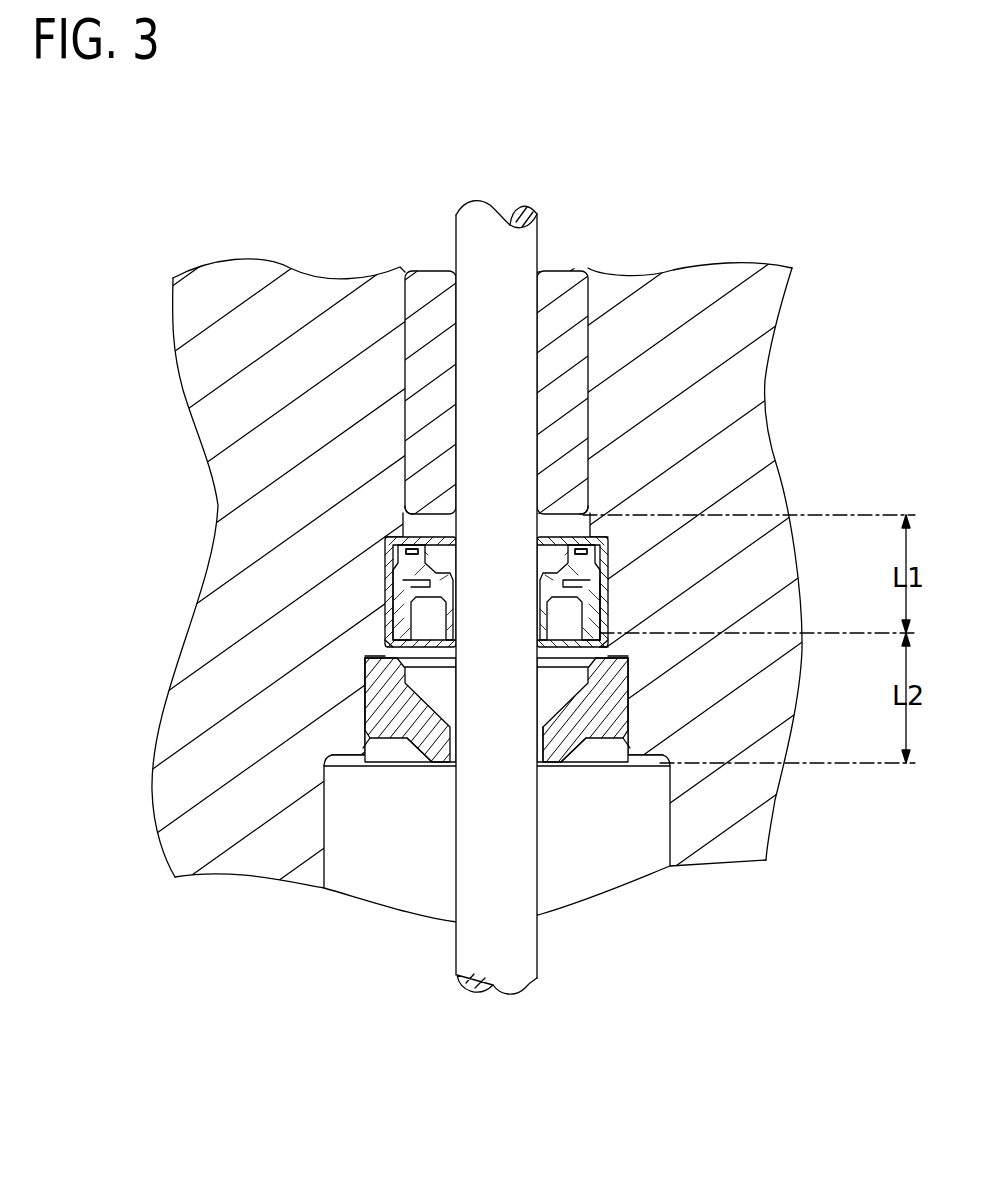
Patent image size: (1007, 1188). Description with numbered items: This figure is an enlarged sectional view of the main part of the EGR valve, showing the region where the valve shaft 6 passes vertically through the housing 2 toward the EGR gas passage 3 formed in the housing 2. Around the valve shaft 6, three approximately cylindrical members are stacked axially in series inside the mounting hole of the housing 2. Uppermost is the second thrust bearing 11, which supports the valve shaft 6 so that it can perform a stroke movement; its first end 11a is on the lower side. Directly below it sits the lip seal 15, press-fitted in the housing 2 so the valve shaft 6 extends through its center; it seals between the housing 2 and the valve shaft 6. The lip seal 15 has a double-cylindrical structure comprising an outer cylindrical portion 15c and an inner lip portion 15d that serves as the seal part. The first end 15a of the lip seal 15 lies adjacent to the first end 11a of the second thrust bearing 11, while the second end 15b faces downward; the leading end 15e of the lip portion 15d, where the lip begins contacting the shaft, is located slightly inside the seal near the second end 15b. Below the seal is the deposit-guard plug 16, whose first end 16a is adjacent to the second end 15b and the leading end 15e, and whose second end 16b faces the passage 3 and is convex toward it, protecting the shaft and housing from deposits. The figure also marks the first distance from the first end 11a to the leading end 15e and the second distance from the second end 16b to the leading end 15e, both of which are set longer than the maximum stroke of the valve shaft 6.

The housing 2 is at (217, 424).
The EGR gas passage 3 is at (609, 834).
The valve shaft 6 is at (452, 233).
The second thrust bearing 11 is at (400, 373).
The first end 11a is at (400, 514).
The lip seal 15 is at (387, 570).
The first end 15a is at (408, 530).
The second end 15b is at (385, 645).
The outer cylindrical portion 15c is at (613, 628).
The inner lip portion 15d is at (604, 597).
The leading end 15e is at (580, 690).
The deposit-guard plug 16 is at (365, 690).
The first end 16a is at (368, 653).
The second end 16b is at (437, 763).